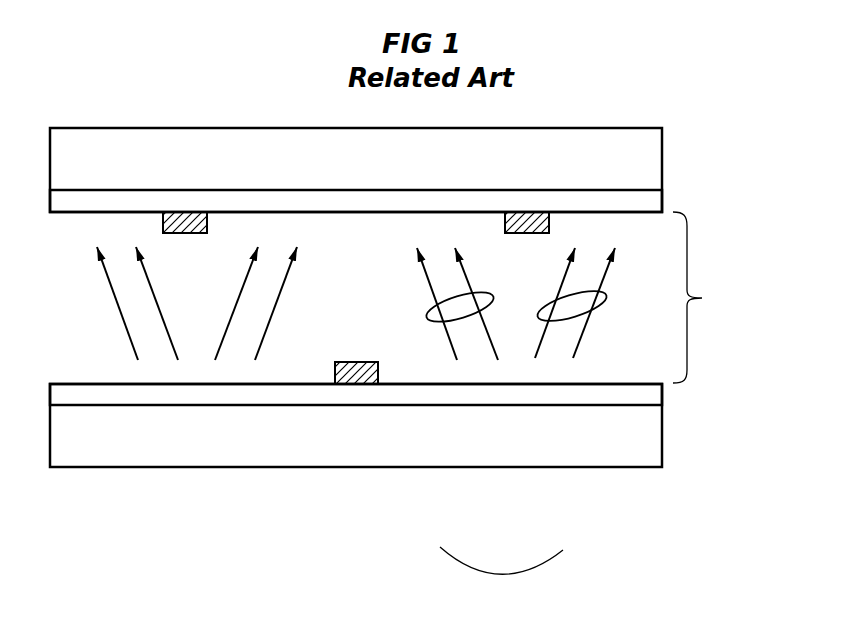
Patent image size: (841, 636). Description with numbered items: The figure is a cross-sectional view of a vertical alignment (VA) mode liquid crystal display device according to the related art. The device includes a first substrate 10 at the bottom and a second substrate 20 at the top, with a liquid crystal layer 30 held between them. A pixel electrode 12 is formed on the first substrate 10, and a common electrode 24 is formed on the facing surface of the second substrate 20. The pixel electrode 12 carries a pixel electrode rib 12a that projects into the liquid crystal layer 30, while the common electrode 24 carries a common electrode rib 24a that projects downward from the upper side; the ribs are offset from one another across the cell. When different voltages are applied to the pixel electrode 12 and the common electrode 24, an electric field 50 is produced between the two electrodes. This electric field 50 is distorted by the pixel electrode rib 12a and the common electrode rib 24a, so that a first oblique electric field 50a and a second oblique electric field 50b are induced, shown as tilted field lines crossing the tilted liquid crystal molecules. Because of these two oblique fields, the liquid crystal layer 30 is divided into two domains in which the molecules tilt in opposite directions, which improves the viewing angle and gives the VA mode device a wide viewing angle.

The first substrate 10 is at (630, 448).
The pixel electrode 12 is at (657, 395).
The pixel electrode rib 12a is at (355, 360).
The second substrate 20 is at (630, 172).
The common electrode 24 is at (661, 201).
The common electrode rib 24a is at (184, 236).
The liquid crystal layer 30 is at (712, 297).
The electric field 50 is at (501, 577).
The first oblique electric field 50a is at (433, 322).
The second oblique electric field 50b is at (562, 318).